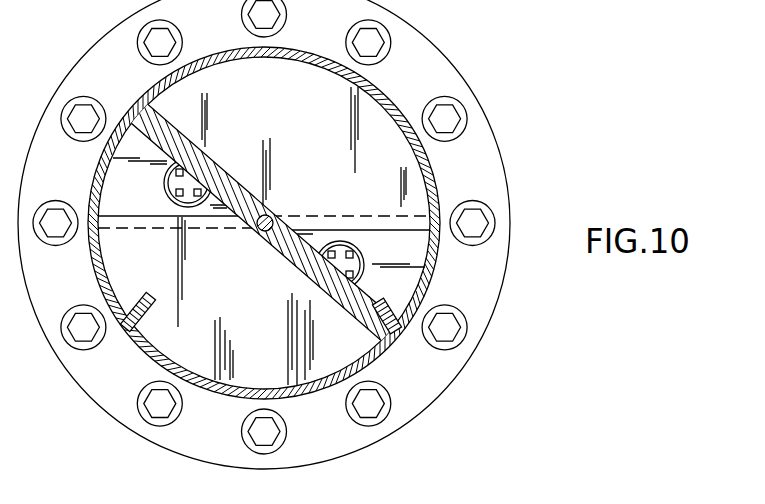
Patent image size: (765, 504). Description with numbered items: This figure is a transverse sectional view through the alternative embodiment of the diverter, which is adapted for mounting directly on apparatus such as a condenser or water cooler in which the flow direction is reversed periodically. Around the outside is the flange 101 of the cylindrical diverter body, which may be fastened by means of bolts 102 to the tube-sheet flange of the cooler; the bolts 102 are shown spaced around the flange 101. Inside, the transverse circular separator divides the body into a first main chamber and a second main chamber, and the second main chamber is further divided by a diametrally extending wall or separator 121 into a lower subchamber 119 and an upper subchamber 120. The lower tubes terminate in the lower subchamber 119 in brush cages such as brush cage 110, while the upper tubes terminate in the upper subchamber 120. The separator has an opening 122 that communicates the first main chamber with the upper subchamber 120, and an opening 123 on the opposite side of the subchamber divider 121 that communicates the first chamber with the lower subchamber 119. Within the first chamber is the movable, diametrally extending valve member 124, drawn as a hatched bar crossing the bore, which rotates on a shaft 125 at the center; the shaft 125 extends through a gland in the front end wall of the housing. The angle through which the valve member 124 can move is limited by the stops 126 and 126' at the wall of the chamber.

The flange 101 is at (488, 183).
The bolts 102 is at (452, 118).
The brush cage 110 is at (359, 256).
The lower subchamber 119 is at (408, 270).
The upper subchamber 120 is at (134, 163).
The diametrally extending wall or separator 121 is at (370, 220).
The opening 122 is at (127, 221).
The opening 123 is at (326, 235).
The valve member 124 is at (300, 268).
The shaft 125 is at (259, 233).
The stop 126 is at (402, 341).
The stop 126' is at (120, 338).